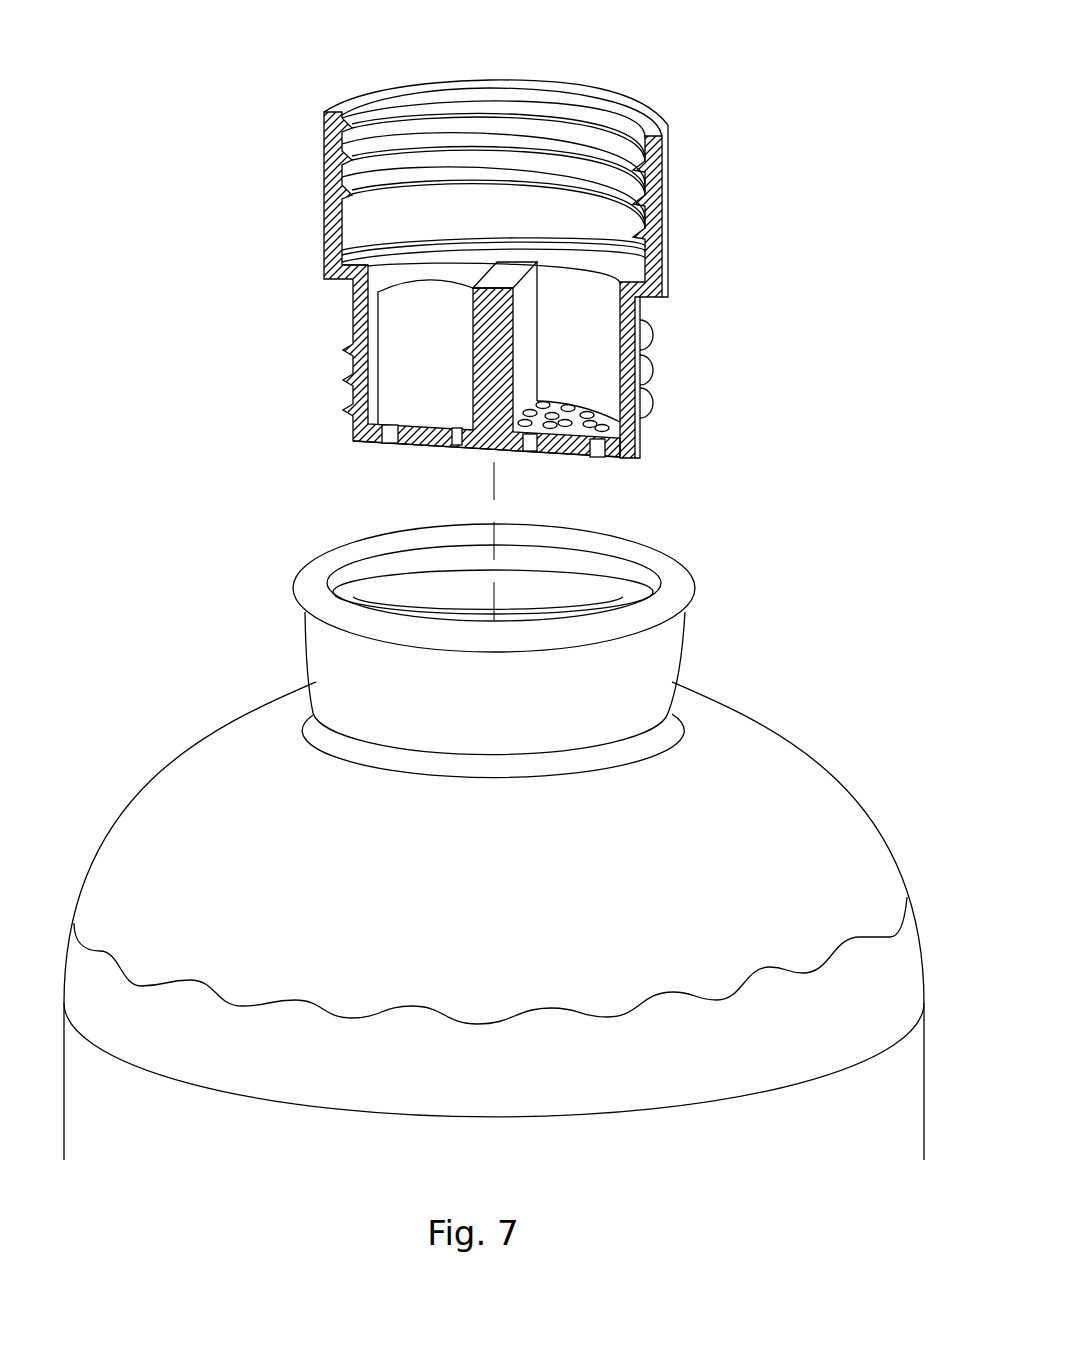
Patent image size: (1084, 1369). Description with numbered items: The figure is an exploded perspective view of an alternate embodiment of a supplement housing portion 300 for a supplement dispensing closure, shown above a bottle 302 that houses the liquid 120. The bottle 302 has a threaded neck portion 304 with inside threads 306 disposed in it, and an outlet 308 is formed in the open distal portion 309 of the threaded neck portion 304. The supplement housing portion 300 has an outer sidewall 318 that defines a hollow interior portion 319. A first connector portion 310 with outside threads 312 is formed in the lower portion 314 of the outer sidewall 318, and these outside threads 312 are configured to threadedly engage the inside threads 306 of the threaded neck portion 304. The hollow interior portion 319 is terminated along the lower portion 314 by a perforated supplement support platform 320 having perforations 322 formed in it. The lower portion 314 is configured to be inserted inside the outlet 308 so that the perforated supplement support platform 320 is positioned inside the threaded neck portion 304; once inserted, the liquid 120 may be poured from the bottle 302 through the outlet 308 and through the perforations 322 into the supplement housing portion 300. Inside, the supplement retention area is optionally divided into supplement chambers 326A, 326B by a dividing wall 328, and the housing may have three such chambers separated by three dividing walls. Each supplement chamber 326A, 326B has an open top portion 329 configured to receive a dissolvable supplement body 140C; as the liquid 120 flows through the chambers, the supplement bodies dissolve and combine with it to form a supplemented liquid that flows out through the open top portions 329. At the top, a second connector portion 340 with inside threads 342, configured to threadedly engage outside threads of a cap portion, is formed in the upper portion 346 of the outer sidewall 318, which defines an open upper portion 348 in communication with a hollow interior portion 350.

The supplement housing portion 300 is at (792, 76).
The bottle 302 is at (790, 622).
The threaded neck portion 304 is at (684, 565).
The inside threads 306 is at (598, 587).
The outlet 308 is at (549, 562).
The open distal portion 309 is at (330, 557).
The first connector portion 310 is at (645, 356).
The outside threads 312 is at (650, 373).
The lower portion 314 is at (648, 398).
The outer sidewall 318 is at (638, 320).
The hollow interior portion 319 is at (637, 437).
The perforated supplement support platform 320 is at (492, 447).
The perforations 322 is at (392, 437).
The supplement chamber 326A is at (587, 283).
The supplement chamber 326B is at (392, 266).
The dividing wall 328 is at (517, 267).
The open top portion 329 is at (577, 265).
The second connector portion 340 is at (668, 183).
The inside threads 342 is at (414, 106).
The upper portion 346 is at (668, 155).
The open upper portion 348 is at (557, 95).
The hollow interior portion 350 is at (505, 140).
The dissolvable supplement body 140C is at (405, 312).
The liquid 120 is at (447, 1008).